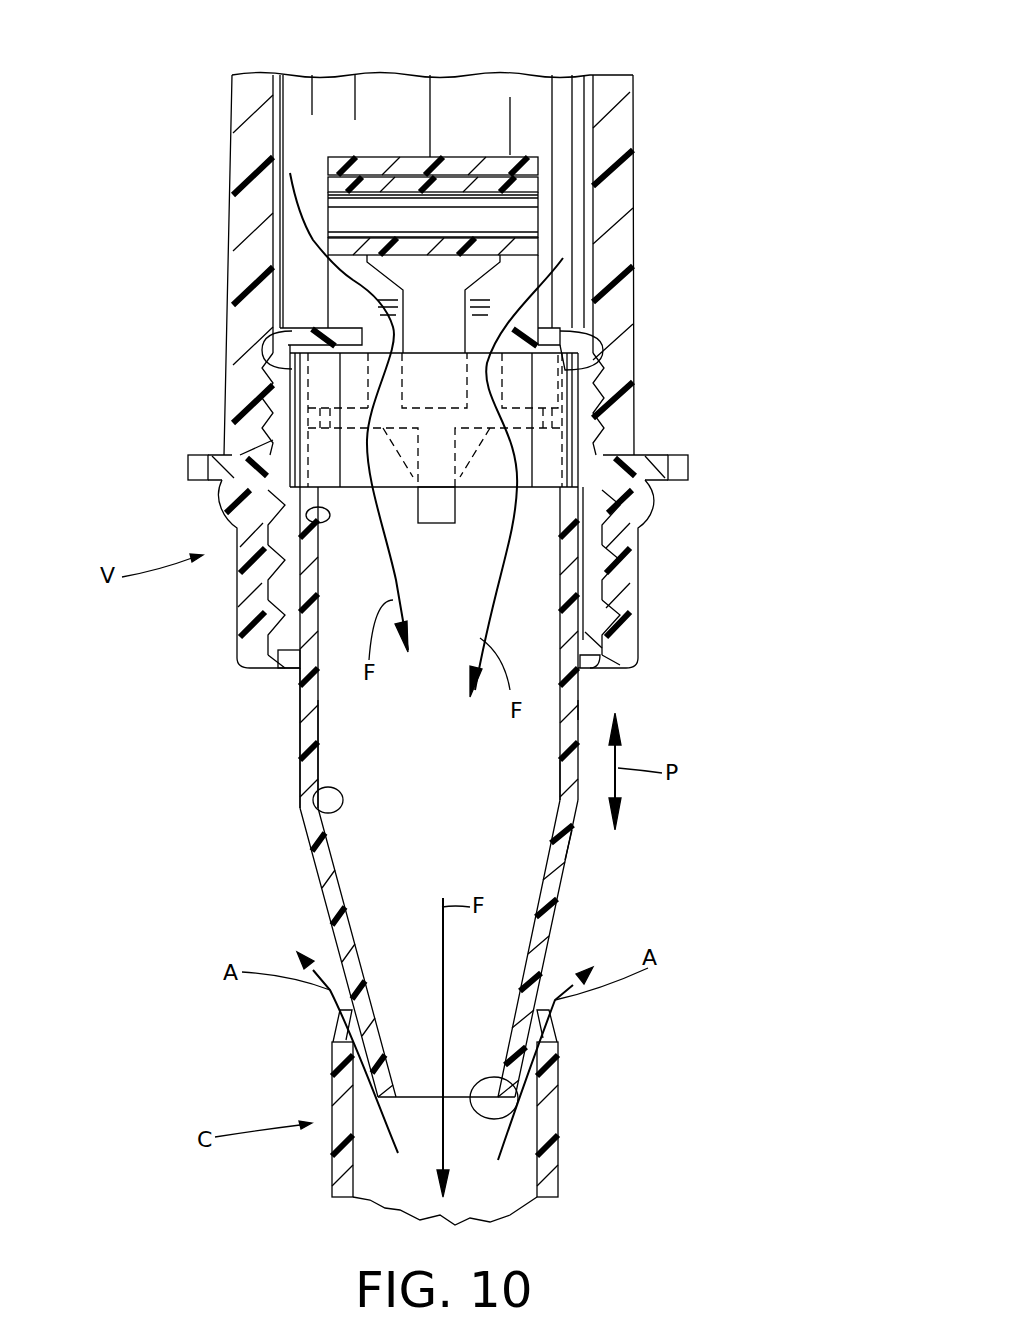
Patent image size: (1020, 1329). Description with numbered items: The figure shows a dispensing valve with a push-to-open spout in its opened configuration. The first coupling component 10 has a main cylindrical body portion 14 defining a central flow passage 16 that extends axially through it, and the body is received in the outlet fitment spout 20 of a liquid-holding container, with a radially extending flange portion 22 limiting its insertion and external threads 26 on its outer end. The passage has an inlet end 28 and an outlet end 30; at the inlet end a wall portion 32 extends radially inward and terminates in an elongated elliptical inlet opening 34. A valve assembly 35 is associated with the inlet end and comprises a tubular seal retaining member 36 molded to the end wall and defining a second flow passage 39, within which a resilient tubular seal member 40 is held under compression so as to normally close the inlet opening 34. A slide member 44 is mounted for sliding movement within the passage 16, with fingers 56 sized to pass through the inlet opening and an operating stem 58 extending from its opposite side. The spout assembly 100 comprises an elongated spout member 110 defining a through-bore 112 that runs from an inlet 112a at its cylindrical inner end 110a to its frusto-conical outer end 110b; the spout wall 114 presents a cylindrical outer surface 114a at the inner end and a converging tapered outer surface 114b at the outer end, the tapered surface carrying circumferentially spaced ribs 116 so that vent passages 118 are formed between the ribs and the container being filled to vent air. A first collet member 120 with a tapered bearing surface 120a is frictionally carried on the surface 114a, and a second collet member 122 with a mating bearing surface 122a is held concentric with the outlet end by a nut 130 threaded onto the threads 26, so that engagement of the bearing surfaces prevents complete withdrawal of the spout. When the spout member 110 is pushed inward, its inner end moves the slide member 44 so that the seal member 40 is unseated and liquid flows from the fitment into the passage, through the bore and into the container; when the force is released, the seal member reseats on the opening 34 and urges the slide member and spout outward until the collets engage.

The first coupling component 10 is at (597, 430).
The main cylindrical body portion 14 is at (617, 532).
The first or central flow passage 16 is at (578, 603).
The outlet spout or fitment spout 20 is at (612, 250).
The radially extending flange portion 22 is at (690, 466).
The external threads 26 is at (263, 600).
The inlet end 28 is at (570, 366).
The outlet end 30 is at (588, 645).
The wall portion 32 is at (565, 332).
The inlet opening 34 is at (385, 352).
The valve assembly 35 is at (560, 205).
The tubular seal retaining member 36 is at (370, 165).
The second flow passage 39 is at (326, 204).
The resilient tubular seal member 40 is at (485, 185).
The slide member 44 is at (318, 390).
The fingers 56 is at (383, 287).
The operating stem 58 is at (442, 507).
The spout assembly 100 is at (206, 790).
The spout member 110 is at (310, 888).
The inner end 110a is at (352, 637).
The outer end 110b is at (499, 942).
The through-bore 112 is at (317, 806).
The inlet 112a is at (305, 517).
The tube wall 114 is at (552, 938).
The cylindrical outer surface 114a is at (598, 706).
The converging tapered outer surface 114b is at (587, 854).
The ribs 116 is at (360, 994).
The vent passages 118 is at (336, 1034).
The first collet member 120 is at (298, 547).
The tapered bearing surface 120a is at (600, 575).
The second collet member 122 is at (597, 672).
The bearing surface 122a is at (590, 637).
The nut 130 is at (237, 655).